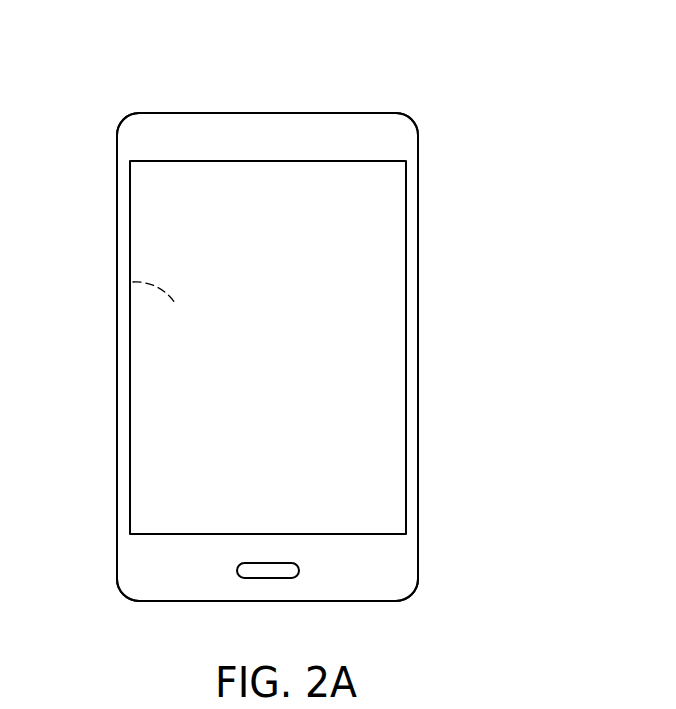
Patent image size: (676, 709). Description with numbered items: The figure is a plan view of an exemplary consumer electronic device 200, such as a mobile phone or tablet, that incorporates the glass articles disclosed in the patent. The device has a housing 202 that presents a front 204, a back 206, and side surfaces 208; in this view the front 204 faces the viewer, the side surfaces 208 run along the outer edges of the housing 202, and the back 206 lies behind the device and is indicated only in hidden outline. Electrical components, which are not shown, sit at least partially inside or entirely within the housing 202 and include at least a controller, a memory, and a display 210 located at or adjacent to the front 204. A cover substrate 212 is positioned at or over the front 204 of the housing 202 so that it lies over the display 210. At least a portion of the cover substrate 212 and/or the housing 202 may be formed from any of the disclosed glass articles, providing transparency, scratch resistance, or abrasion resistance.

The consumer electronic device 200 is at (483, 90).
The housing 202 is at (129, 150).
The front surface 204 is at (395, 574).
The back surface 206 is at (133, 282).
The side surfaces 208 is at (419, 382).
The display 210 is at (377, 259).
The cover substrate 212 is at (172, 421).